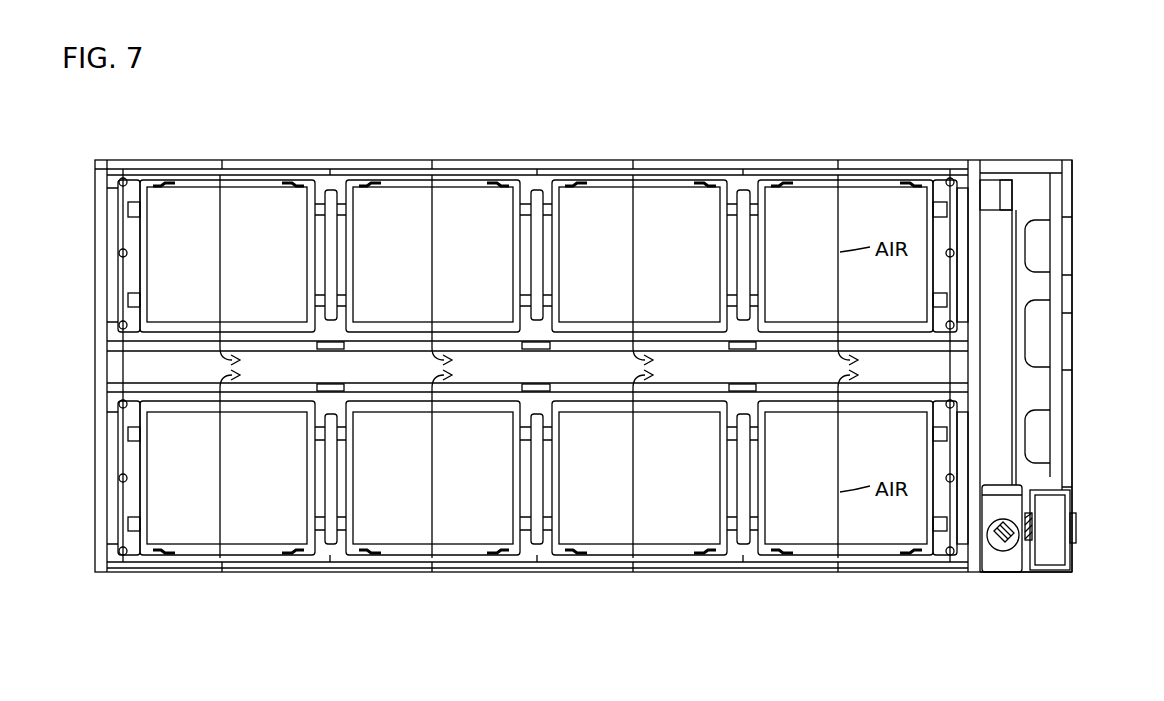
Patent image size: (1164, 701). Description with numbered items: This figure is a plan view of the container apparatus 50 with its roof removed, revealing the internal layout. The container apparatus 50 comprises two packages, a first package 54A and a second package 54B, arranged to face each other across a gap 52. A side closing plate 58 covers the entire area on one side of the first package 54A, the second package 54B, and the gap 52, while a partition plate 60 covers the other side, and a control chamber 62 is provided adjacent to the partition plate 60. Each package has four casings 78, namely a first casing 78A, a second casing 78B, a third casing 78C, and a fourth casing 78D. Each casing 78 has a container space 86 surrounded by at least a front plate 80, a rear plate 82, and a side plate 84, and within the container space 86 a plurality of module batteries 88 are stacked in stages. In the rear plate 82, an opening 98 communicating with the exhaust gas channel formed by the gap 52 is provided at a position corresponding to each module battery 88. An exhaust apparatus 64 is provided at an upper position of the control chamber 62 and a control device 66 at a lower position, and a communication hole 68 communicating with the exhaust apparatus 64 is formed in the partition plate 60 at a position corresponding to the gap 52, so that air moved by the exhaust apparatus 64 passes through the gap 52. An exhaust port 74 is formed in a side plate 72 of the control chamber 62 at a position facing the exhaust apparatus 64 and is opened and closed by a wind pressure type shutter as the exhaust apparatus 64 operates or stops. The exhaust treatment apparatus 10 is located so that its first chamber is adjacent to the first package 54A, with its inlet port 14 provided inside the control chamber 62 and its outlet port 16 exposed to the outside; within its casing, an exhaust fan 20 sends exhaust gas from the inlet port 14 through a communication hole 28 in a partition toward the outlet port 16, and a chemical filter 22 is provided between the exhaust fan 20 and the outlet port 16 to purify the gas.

The exhaust treatment apparatus 10 is at (1040, 578).
The inlet port 14 is at (985, 485).
The outlet port 16 is at (1077, 530).
The exhaust fan 20 is at (1002, 546).
The chemical filter 22 is at (1055, 553).
The communication hole 28 is at (1030, 518).
The container apparatus 50 is at (246, 91).
The gap 52 is at (150, 370).
The first package 54A is at (590, 578).
The second package 54B is at (453, 158).
The side closing plate 58 is at (97, 262).
The partition plate 60 is at (970, 163).
The control chamber 62 is at (1080, 343).
The exhaust apparatus 64 is at (1037, 225).
The control device 66 is at (995, 225).
The communication hole 68 is at (972, 370).
The side plate 72 is at (1072, 184).
The exhaust port 74 is at (1072, 244).
The casing 78 is at (536, 412).
The first casing 78A is at (222, 578).
The second casing 78B is at (429, 578).
The third casing 78C is at (632, 578).
The fourth casing 78D is at (827, 578).
The front plate 80 is at (358, 160).
The rear plate 82 is at (462, 388).
The side plate 84 is at (329, 542).
The container space 86 is at (390, 562).
The module battery 88 is at (257, 188).
The opening 98 is at (356, 345).